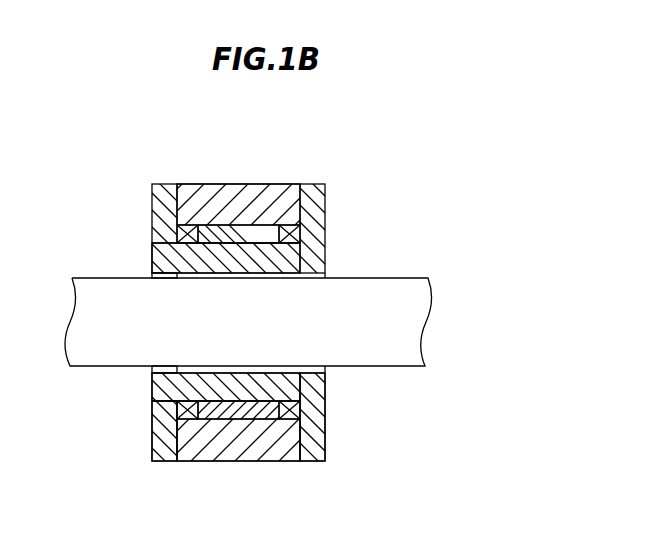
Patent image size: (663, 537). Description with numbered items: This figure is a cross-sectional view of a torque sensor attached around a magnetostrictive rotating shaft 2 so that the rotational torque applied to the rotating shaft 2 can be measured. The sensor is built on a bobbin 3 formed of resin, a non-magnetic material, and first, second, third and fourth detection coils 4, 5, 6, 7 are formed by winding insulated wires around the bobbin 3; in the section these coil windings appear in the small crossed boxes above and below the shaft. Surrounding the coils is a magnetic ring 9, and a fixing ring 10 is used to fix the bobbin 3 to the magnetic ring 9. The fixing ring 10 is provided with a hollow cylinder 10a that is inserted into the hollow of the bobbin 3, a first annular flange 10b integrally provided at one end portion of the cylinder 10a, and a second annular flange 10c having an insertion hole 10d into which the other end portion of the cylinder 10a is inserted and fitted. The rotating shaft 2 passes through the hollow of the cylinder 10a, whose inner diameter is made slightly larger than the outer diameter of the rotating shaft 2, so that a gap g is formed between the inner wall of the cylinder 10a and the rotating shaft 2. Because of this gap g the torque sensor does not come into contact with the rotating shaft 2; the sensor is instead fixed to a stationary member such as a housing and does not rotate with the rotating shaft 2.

The rotating shaft 2 is at (368, 292).
The bobbin 3 is at (235, 232).
The first detection coil 4 is at (178, 233).
The second detection coil 5 is at (289, 234).
The third detection coil 6 is at (187, 410).
The fourth detection coil 7 is at (289, 410).
The magnetic ring 9 is at (222, 188).
The fixing ring 10 is at (334, 180).
The cylinder 10a is at (253, 393).
The first annular flange 10b is at (315, 442).
The second annular flange 10c is at (162, 445).
The insertion hole 10d is at (168, 258).
The gap g is at (331, 377).